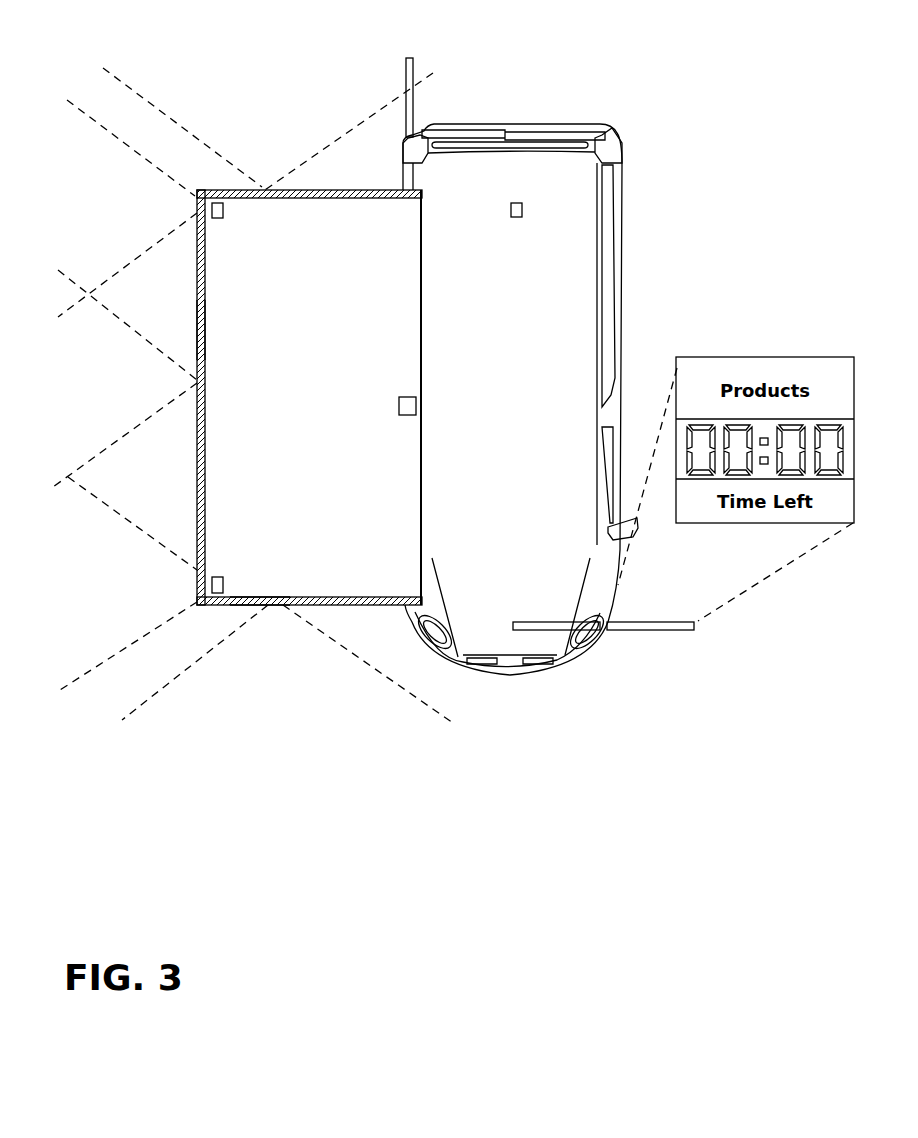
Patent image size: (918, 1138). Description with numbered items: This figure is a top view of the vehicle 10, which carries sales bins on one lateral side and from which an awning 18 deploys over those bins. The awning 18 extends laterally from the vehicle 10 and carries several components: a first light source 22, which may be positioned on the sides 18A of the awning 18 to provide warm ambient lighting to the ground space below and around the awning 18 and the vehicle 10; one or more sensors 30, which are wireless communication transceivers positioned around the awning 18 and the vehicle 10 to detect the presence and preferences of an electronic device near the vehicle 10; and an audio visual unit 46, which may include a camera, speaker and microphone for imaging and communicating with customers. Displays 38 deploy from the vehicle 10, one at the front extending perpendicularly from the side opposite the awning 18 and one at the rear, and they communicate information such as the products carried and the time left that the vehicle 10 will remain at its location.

The vehicle 10 is at (654, 133).
The awning 18 is at (294, 396).
The sides of the awning 18A is at (197, 325).
The first light source 22 is at (247, 605).
The sensor 30 is at (212, 210).
The display 38 is at (405, 73).
The audio visual unit 46 is at (412, 398).